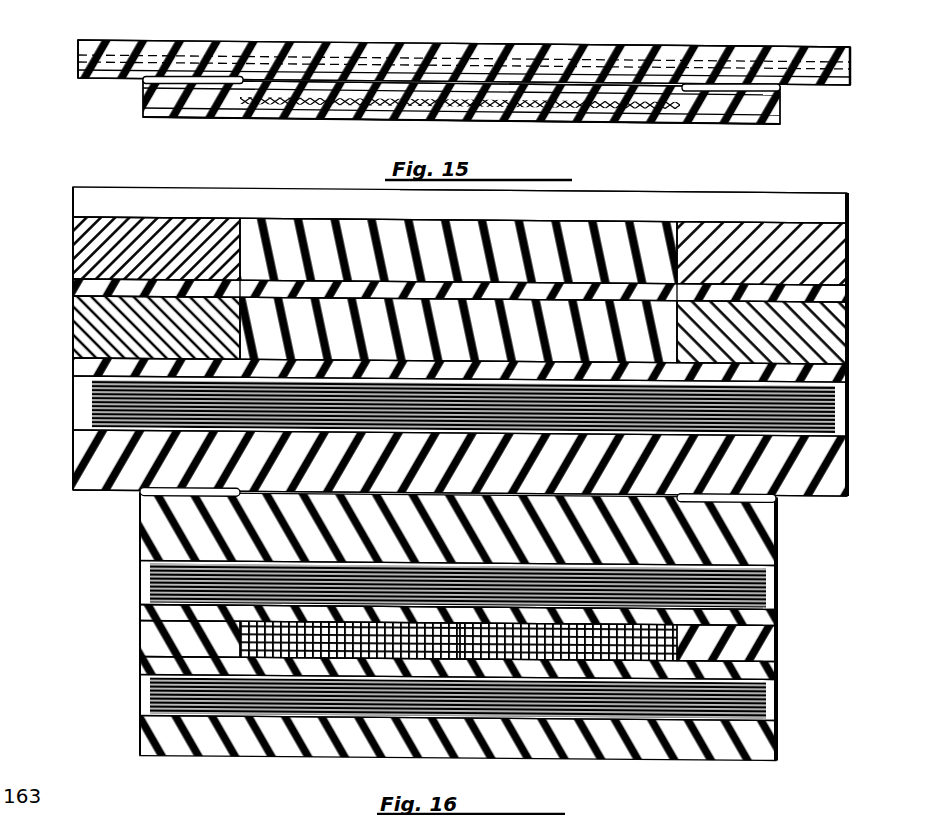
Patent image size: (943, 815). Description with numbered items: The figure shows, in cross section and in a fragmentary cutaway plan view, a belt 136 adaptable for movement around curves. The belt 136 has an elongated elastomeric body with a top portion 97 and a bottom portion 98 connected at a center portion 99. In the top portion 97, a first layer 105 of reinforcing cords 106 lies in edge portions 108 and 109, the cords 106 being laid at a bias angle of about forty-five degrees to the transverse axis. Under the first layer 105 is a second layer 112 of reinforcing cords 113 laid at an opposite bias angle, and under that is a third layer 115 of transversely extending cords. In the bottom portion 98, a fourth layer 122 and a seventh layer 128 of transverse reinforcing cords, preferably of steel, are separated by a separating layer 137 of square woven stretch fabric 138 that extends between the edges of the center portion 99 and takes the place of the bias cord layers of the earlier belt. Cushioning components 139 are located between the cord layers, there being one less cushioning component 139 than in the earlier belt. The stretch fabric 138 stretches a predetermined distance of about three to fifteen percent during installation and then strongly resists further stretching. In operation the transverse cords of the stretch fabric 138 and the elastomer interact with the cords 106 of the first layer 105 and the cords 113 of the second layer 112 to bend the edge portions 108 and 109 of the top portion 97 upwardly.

In FIG. 15, the top portion 97 is at (565, 52).
In FIG. 16, the top portion 97 is at (598, 195).
In FIG. 15, the bottom portion 98 is at (712, 107).
In FIG. 16, the bottom portion 98 is at (777, 727).
In FIG. 15, the center portion 99 is at (287, 87).
In FIG. 16, the center portion 99 is at (158, 511).
In FIG. 15, the first layer 105 is at (78, 44).
In FIG. 16, the first layer 105 is at (73, 262).
In FIG. 16, the reinforcing cords 106 is at (110, 223).
In FIG. 15, the edge portion 108 is at (147, 40).
In FIG. 16, the edge portion 108 is at (156, 207).
In FIG. 15, the edge portion 109 is at (787, 46).
In FIG. 16, the edge portion 109 is at (770, 207).
In FIG. 15, the second layer 112 is at (80, 61).
In FIG. 16, the second layer 112 is at (73, 330).
In FIG. 16, the reinforcing cords 113 is at (840, 334).
In FIG. 16, the third layer 115 is at (78, 383).
In FIG. 15, the fourth layer 122 is at (783, 92).
In FIG. 16, the fourth layer 122 is at (762, 580).
In FIG. 15, the seventh layer 128 is at (782, 118).
In FIG. 16, the seventh layer 128 is at (774, 690).
In FIG. 15, the belt 136 is at (818, 46).
In FIG. 16, the belt 136 is at (834, 196).
In FIG. 15, the separating layer 137 is at (390, 105).
In FIG. 16, the separating layer 137 is at (596, 650).
In FIG. 16, the square woven stretch fabric 138 is at (385, 650).
In FIG. 16, the cushioning component 139 is at (80, 289).